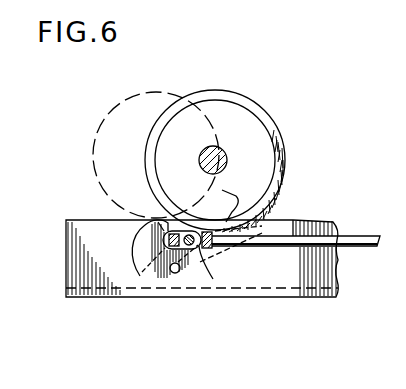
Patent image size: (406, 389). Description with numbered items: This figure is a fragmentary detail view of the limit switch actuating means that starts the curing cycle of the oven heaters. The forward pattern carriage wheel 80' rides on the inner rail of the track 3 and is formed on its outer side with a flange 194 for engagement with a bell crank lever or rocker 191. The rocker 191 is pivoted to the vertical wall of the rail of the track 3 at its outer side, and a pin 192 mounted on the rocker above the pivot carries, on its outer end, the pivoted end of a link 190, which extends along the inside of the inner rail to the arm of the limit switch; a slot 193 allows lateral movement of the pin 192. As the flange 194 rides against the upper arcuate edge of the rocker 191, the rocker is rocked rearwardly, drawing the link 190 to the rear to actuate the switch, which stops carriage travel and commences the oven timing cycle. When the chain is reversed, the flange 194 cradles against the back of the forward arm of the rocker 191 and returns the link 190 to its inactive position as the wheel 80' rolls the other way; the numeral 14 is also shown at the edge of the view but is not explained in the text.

The track 3 is at (293, 222).
The frame 14 is at (399, 157).
The forward pattern carriage wheel 80' is at (209, 156).
The link 190 is at (358, 236).
The bell crank lever or rocker 191 is at (141, 272).
The pin 192 is at (220, 239).
The slot 193 is at (182, 228).
The flange 194 is at (270, 121).